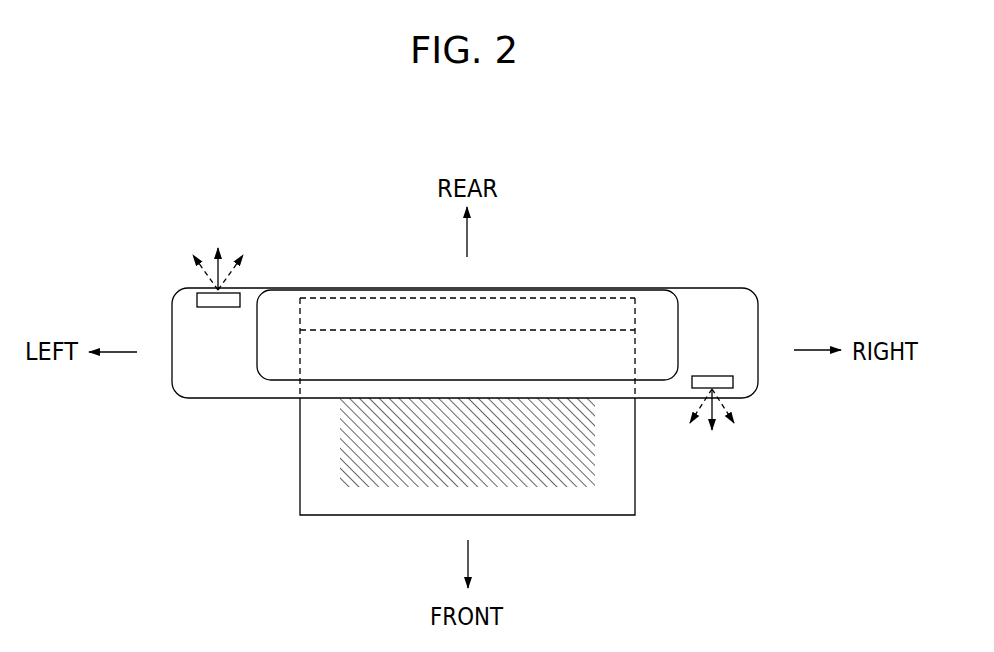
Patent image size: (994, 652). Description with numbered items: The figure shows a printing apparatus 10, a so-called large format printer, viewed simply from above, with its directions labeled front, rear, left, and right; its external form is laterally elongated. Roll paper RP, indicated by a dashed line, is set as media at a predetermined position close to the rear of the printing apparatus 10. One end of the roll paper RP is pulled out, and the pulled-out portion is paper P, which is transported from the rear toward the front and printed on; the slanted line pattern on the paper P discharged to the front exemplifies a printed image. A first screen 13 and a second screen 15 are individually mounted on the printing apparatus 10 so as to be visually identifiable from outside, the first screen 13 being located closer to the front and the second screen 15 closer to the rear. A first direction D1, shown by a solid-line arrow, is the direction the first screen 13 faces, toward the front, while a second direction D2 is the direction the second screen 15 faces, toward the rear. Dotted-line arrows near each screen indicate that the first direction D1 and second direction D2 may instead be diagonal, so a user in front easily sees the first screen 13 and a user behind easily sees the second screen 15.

The printing apparatus 10 is at (207, 398).
The first screen 13 is at (733, 382).
The second screen 15 is at (197, 300).
The paper P is at (300, 490).
The roll paper RP is at (644, 298).
The first direction D1 is at (712, 430).
The second direction D2 is at (218, 253).